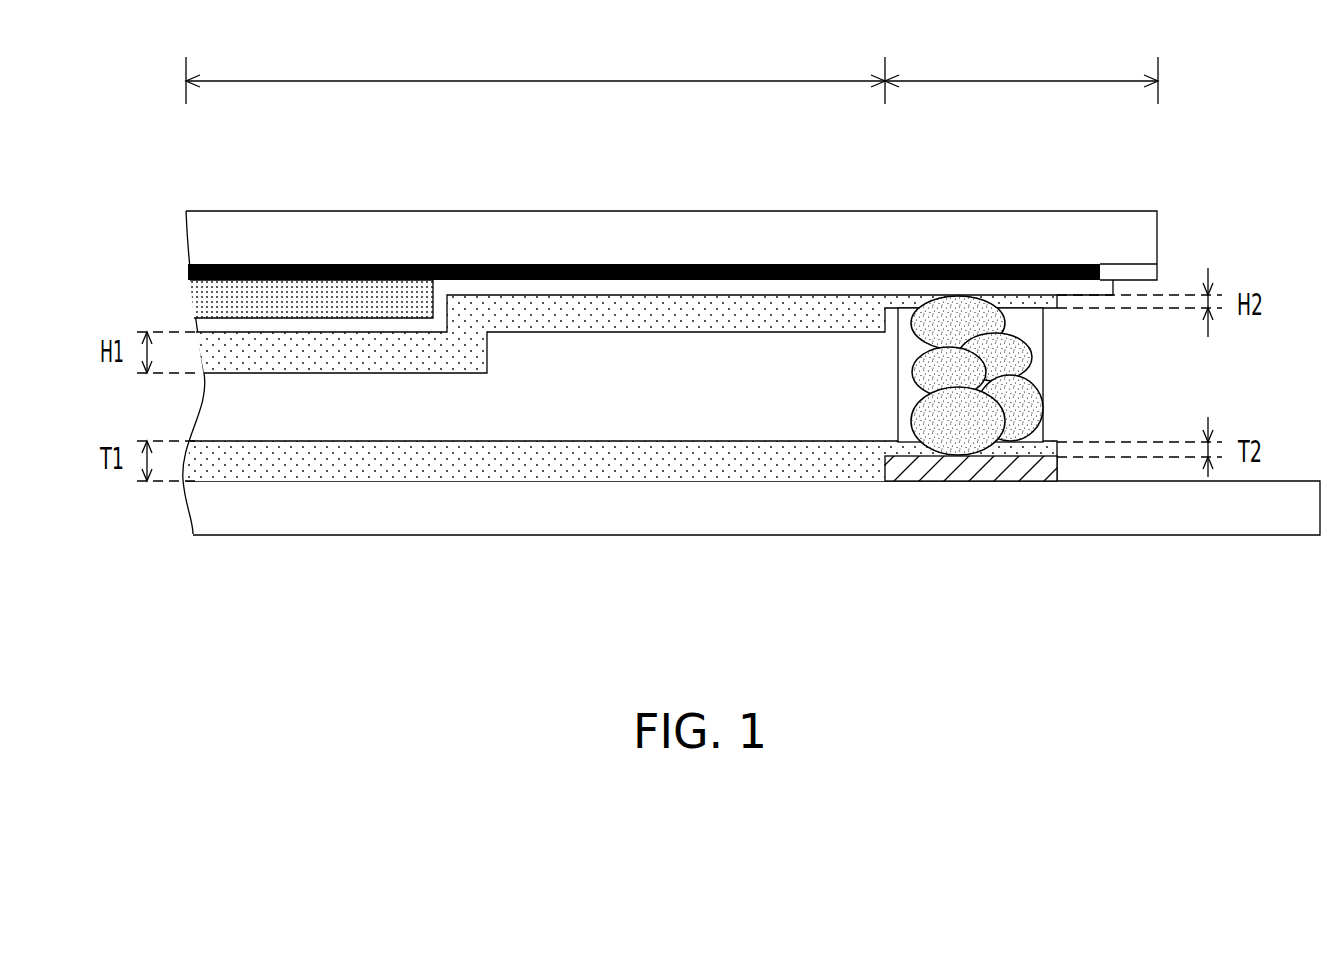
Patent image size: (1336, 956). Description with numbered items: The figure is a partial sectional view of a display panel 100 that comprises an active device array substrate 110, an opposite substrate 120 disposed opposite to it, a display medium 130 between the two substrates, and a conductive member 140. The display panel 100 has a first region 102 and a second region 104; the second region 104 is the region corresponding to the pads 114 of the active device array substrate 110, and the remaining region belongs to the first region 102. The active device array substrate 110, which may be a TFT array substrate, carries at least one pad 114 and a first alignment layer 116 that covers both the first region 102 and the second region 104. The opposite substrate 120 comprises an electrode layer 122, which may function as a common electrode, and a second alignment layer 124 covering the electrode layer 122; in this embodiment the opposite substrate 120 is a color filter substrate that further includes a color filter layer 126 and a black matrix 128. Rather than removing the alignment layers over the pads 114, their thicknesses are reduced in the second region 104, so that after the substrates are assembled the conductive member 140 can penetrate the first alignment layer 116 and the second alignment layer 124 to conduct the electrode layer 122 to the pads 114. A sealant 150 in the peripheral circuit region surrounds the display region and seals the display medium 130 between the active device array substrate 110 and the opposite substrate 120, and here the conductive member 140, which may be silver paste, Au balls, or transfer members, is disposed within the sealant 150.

The display panel 100 is at (1335, 617).
The first region 102 is at (535, 69).
The second region 104 is at (1021, 69).
The active device array substrate 110 is at (167, 507).
The pad 114 is at (967, 465).
The first alignment layer 116 is at (515, 460).
The opposite substrate 120 is at (157, 272).
The electrode layer 122 is at (819, 287).
The second alignment layer 124 is at (705, 312).
The color filter layer 126 is at (313, 293).
The black matrix 128 is at (527, 263).
The display medium 130 is at (688, 403).
The conductive member 140 is at (1028, 408).
The sealant 150 is at (1028, 330).